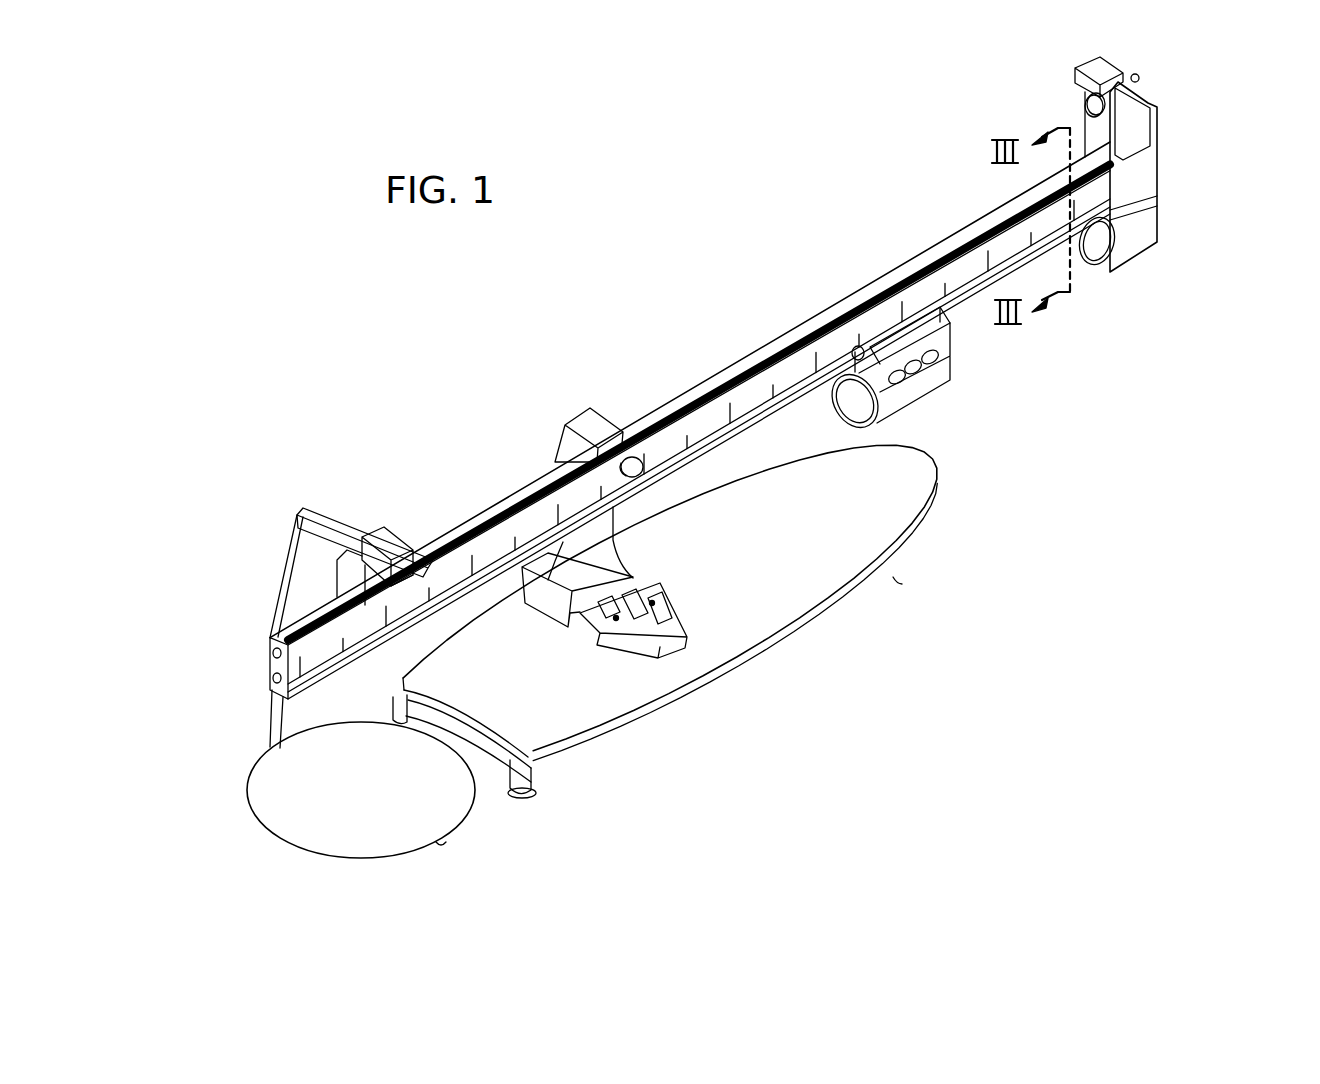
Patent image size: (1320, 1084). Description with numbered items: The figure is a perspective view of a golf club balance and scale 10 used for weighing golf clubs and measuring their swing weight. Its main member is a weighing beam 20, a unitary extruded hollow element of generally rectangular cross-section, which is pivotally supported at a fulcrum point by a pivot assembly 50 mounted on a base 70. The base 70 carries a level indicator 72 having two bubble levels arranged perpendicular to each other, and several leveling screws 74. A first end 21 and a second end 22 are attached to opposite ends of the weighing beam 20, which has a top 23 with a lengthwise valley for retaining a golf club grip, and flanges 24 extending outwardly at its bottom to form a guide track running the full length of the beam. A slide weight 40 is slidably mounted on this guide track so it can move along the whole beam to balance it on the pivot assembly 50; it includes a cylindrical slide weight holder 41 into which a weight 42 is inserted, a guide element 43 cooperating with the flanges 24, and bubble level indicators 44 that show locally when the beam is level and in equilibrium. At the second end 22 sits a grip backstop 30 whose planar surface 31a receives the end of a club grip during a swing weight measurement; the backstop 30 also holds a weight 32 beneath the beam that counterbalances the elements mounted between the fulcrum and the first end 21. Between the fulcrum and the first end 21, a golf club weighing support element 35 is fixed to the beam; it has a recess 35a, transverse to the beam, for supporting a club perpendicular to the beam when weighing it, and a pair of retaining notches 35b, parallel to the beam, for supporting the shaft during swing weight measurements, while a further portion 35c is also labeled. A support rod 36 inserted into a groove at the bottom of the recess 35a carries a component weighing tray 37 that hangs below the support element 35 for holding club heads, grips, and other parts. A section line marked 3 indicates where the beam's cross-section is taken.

The golf club balance and scale 10 is at (1110, 308).
The weighing beam 20 is at (662, 420).
The first end 21 is at (268, 660).
The second end 22 is at (1142, 212).
The top surface 23 is at (995, 237).
The flanges 24 is at (743, 430).
The grip backstop 30 is at (1116, 175).
The surface 31a is at (1085, 105).
The weight 32 is at (1106, 245).
The golf club weighing support element 35 is at (320, 604).
The recess 35a is at (332, 520).
The retaining notches 35b is at (366, 535).
The clamp lower portion 35c is at (412, 588).
The support rod 36 is at (272, 718).
The component weighing tray 37 is at (248, 797).
The slide weight 40 is at (920, 389).
The slide weight holder 41 is at (878, 423).
The weight 42 is at (455, 813).
The guide element 43 is at (933, 320).
The bubble level indicator 44 is at (917, 373).
The pivot assembly 50 is at (569, 403).
The base 70 is at (689, 647).
The level indicator 72 is at (638, 657).
The leveling screws 74 is at (896, 588).
The section line III-III 3 is at (965, 306).